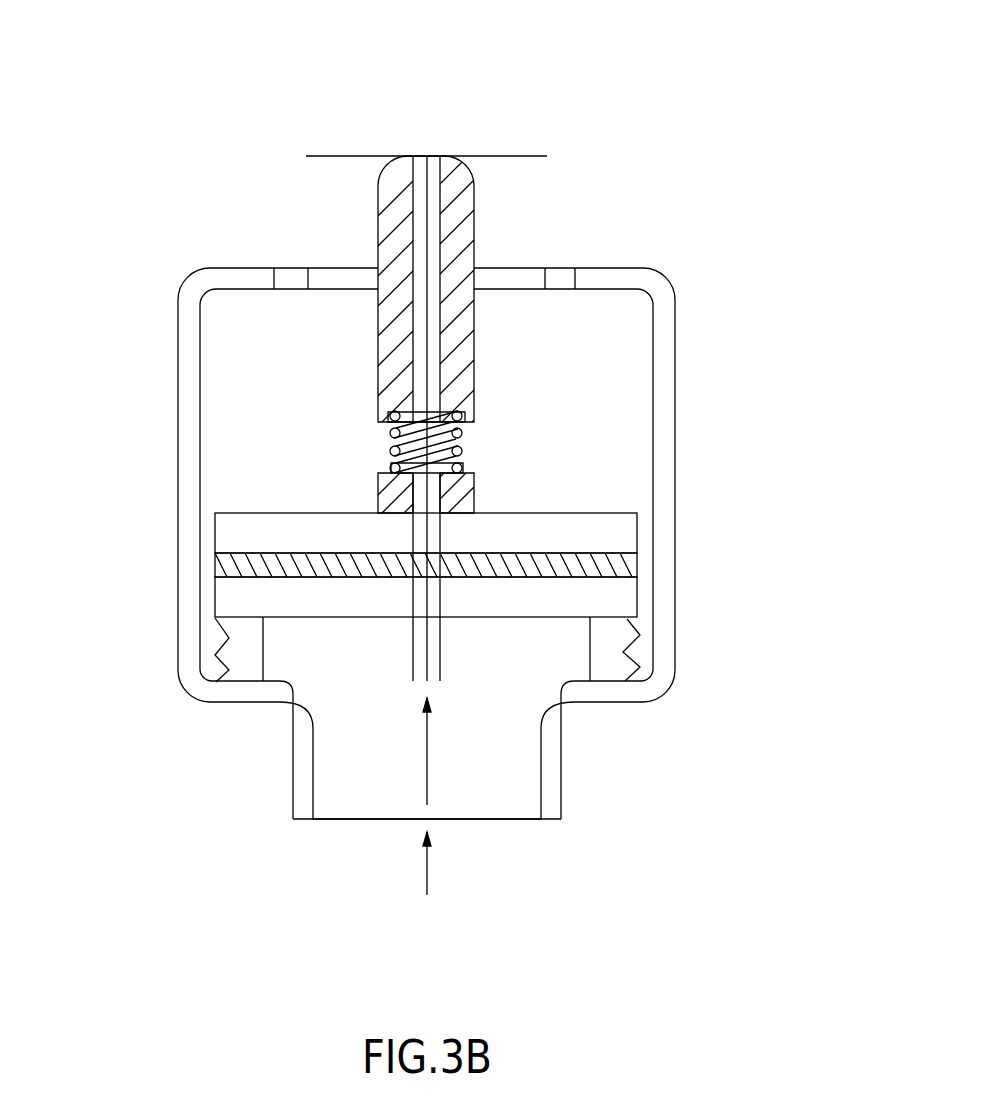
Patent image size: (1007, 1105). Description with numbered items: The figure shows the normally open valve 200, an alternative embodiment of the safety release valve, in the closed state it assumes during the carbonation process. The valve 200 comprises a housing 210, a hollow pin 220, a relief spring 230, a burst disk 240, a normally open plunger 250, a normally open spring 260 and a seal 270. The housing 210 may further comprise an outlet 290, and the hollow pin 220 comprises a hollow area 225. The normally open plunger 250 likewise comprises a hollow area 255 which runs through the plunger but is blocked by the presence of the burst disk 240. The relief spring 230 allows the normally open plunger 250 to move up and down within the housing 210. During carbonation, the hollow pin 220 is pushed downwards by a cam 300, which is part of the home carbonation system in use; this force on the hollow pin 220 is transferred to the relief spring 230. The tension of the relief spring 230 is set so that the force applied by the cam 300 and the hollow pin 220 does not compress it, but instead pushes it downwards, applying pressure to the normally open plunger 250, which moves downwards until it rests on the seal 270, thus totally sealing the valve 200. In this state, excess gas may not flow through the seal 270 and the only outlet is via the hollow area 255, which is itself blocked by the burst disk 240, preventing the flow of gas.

The normally open valve 200 is at (666, 77).
The housing 210 is at (676, 372).
The hollow pin 220 is at (465, 212).
The hollow area 225 is at (432, 168).
The relief spring 230 is at (388, 432).
The burst disk 240 is at (628, 566).
The normally open plunger 250 is at (615, 530).
The hollow area 255 is at (420, 642).
The normally open spring 260 is at (632, 657).
The seal 270 is at (582, 683).
The outlet 290 is at (576, 266).
The cam 300 is at (333, 155).